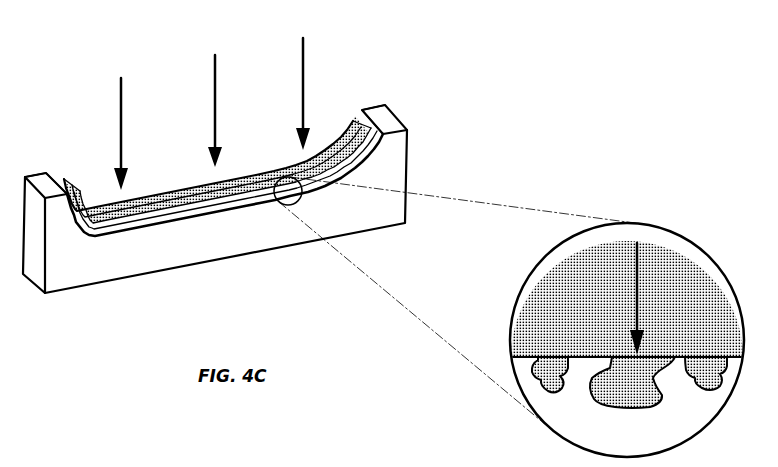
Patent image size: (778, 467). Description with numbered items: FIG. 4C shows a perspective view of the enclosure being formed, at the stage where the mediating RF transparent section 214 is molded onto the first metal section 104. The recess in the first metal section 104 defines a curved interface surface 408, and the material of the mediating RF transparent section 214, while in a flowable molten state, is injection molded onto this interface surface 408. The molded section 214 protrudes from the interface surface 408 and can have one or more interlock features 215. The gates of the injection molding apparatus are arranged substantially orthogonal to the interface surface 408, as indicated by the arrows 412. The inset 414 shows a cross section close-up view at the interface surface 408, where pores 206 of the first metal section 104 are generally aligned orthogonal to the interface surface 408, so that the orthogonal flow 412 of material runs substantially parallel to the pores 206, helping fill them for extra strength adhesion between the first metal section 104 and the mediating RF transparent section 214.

The first metal section 104 is at (405, 175).
The interlock features 215 is at (62, 182).
The mediating RF transparent section 214 is at (250, 205).
The interface surface 408 is at (160, 225).
The pores 206 is at (628, 408).
The arrows 412 is at (121, 105).
The inset 414 is at (513, 300).